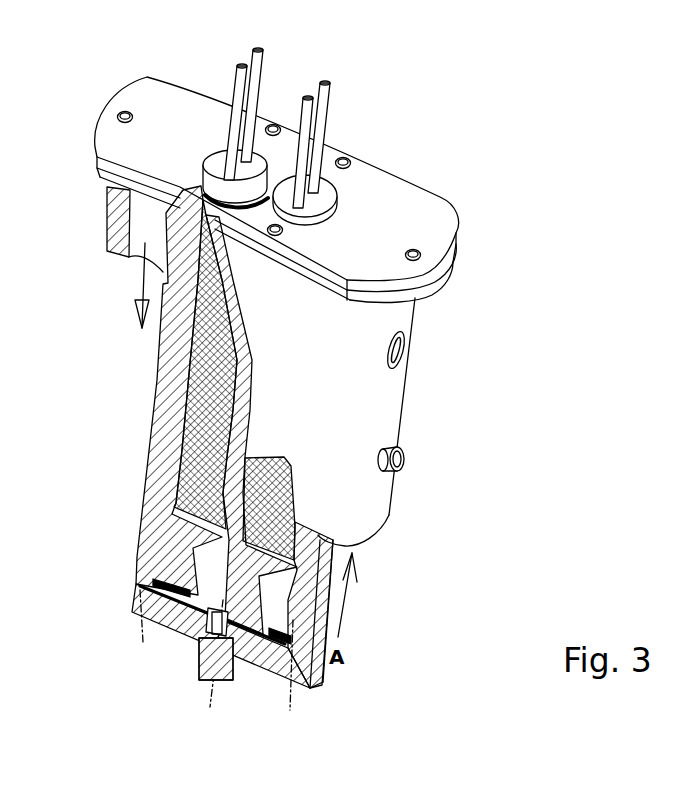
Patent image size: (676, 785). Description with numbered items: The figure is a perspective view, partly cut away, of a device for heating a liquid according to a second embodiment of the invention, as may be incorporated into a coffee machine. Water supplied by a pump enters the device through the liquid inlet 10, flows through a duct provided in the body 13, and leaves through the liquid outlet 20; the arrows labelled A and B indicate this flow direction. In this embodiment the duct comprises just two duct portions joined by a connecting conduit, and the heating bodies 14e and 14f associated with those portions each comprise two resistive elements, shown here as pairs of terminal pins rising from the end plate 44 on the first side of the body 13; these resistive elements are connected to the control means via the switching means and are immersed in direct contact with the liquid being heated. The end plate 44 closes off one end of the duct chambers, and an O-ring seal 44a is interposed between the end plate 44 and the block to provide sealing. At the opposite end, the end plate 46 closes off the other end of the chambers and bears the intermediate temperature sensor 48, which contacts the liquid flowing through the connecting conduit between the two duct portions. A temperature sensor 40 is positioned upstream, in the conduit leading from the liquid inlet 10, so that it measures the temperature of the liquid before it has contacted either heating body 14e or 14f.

The liquid inlet 10 is at (358, 547).
The body 13 is at (157, 423).
The heating body 14e is at (322, 205).
The heating body 14f is at (222, 163).
The liquid outlet 20 is at (133, 262).
The temperature sensor 40 is at (405, 460).
The end plate 44 is at (418, 218).
The O-ring seal 44a is at (130, 213).
The end plate 46 is at (258, 670).
The intermediate temperature sensor 48 is at (202, 650).